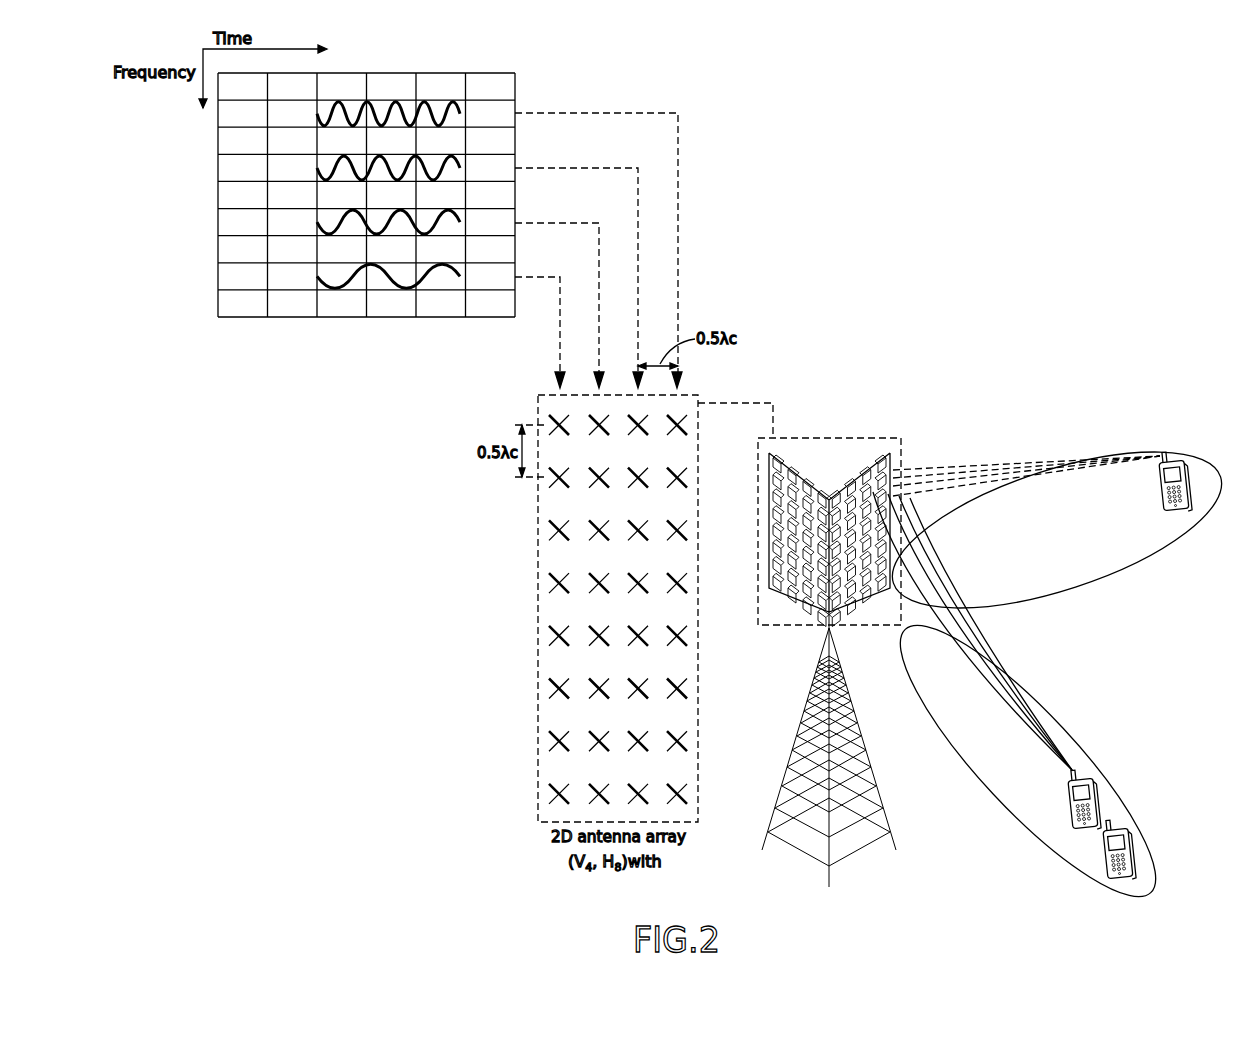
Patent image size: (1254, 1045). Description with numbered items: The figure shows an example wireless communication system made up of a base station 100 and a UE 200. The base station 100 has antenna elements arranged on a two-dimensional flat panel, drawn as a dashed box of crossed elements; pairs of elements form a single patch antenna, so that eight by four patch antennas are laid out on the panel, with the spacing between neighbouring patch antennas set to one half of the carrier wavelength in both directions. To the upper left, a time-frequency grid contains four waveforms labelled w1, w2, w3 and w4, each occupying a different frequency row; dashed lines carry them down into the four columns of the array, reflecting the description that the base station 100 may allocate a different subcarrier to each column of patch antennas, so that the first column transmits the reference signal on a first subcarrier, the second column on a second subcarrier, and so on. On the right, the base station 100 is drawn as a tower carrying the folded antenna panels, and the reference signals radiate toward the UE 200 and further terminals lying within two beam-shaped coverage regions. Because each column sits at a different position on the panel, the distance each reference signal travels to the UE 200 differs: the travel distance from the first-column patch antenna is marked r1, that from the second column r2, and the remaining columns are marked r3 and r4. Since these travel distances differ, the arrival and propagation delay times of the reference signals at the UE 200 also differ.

The base station 100 is at (828, 437).
The UE 200 is at (1183, 464).
The first beamforming weight w1 is at (441, 324).
The second beamforming weight w2 is at (460, 297).
The third beamforming weight w3 is at (480, 269).
The fourth beamforming weight w4 is at (499, 242).
The travel distance of the reference signal from the first-column patch antenna r1 is at (998, 656).
The travel distance of the reference signal from the second-column patch antenna r2 is at (980, 646).
The third beam r3 is at (945, 628).
The fourth beam r4 is at (925, 606).